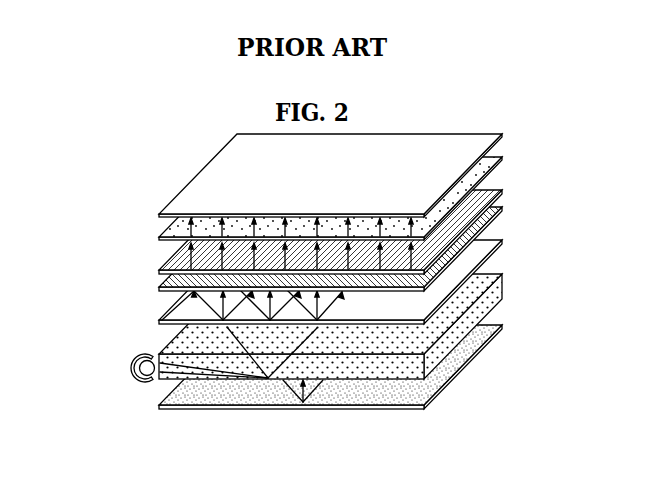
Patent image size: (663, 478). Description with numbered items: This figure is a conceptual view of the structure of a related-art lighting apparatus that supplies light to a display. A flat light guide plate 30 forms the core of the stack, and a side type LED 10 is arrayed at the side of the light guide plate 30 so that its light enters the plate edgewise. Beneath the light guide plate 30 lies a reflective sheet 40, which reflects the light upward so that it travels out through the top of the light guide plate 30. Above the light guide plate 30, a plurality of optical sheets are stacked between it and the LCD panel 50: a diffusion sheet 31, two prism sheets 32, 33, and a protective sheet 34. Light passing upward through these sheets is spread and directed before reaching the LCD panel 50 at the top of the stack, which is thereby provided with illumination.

The side type LED 10 is at (124, 368).
The light guide plate 30 is at (503, 277).
The diffusion sheet 31 is at (503, 243).
The prism sheet 32 is at (503, 209).
The prism sheet 33 is at (503, 193).
The protective sheet 34 is at (503, 159).
The reflective sheet 40 is at (503, 328).
The LCD panel 50 is at (503, 135).